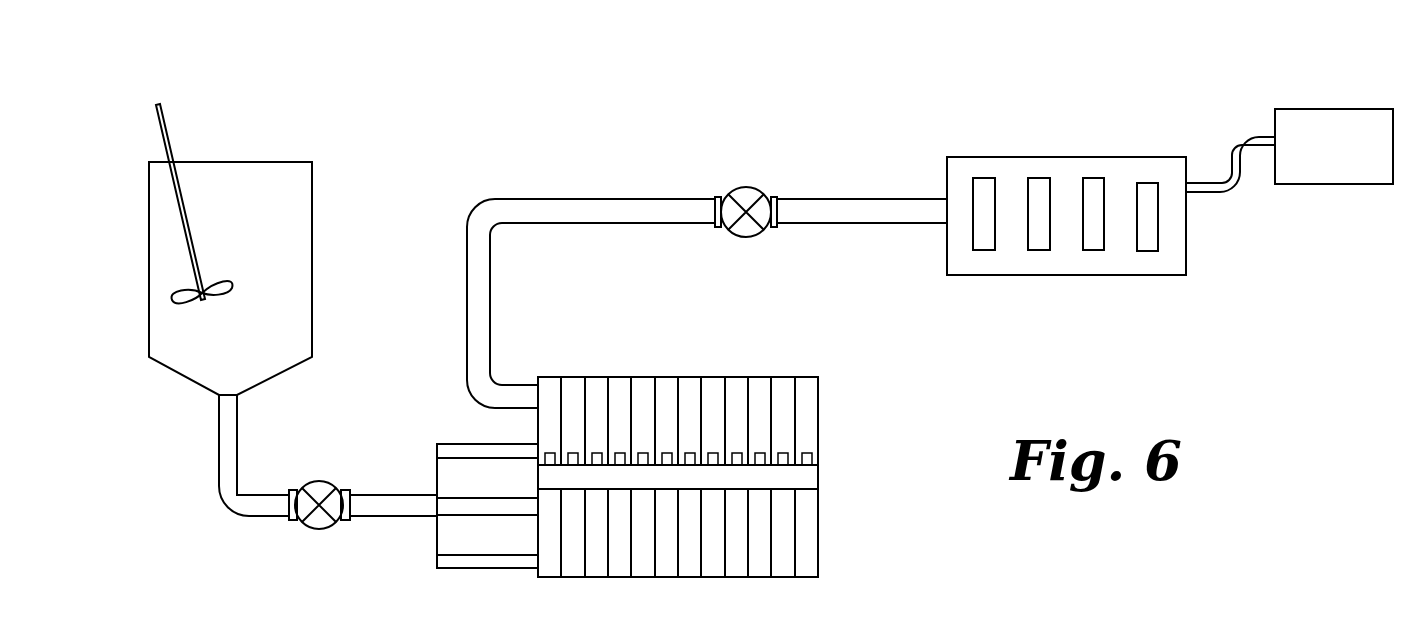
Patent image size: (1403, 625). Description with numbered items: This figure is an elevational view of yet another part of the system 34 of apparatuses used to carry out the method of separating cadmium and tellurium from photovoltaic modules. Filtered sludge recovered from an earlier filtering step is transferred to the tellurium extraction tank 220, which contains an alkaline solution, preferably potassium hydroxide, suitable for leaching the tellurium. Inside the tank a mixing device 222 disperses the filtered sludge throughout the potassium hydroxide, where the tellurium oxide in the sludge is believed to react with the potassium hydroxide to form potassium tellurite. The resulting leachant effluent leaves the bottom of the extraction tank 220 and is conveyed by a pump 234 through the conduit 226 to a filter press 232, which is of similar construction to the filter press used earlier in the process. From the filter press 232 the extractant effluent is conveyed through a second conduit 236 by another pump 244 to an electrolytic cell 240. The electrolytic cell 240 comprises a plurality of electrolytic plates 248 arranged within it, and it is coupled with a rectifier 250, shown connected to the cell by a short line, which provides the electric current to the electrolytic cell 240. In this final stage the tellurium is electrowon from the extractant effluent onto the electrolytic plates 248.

The system 34 is at (805, 96).
The tellurium extraction tank 220 is at (312, 306).
The mixing device 222 is at (166, 136).
The conduit 226 is at (230, 460).
The pump 234 is at (315, 530).
The filter press 232 is at (652, 366).
The conduit 236 is at (653, 212).
The pump 244 is at (746, 187).
The electrolytic cell 240 is at (1064, 143).
The electrolytic plates 248 is at (1090, 232).
The rectifier 250 is at (1305, 90).